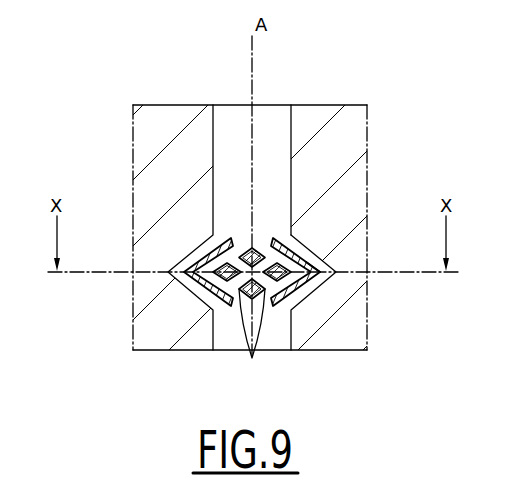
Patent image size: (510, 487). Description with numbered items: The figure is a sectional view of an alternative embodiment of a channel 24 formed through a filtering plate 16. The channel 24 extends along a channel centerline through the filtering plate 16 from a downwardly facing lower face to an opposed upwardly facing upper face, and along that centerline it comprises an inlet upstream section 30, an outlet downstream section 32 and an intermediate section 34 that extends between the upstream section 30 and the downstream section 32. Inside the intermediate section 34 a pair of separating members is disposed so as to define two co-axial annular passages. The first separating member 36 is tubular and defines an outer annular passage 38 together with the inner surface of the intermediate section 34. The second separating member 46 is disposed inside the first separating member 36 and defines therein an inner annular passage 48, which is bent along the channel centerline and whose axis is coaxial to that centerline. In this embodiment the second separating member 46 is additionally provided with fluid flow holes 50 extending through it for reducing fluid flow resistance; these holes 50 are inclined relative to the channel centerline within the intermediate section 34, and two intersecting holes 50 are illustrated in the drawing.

The filtering plate 16 is at (348, 121).
The channel 24 is at (282, 344).
The inlet upstream section 30 is at (289, 316).
The outlet downstream section 32 is at (291, 126).
The intermediate section 34 is at (321, 269).
The first separating member 36 is at (293, 249).
The outer annular passage 38 is at (193, 250).
The second separating member 46 is at (252, 247).
The inner annular passage 48 is at (213, 292).
The fluid flow holes 50 is at (252, 359).